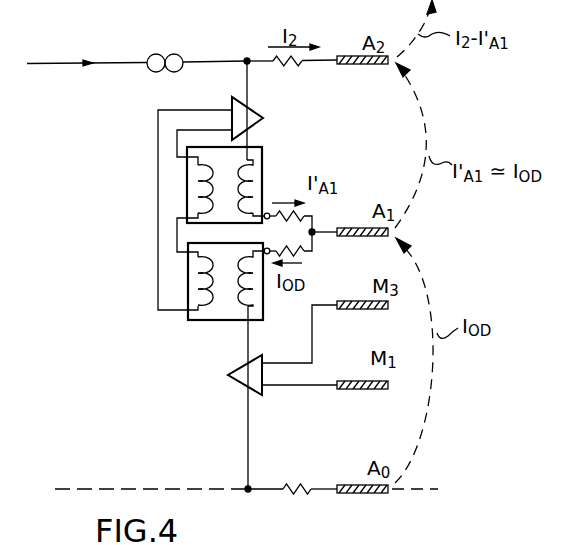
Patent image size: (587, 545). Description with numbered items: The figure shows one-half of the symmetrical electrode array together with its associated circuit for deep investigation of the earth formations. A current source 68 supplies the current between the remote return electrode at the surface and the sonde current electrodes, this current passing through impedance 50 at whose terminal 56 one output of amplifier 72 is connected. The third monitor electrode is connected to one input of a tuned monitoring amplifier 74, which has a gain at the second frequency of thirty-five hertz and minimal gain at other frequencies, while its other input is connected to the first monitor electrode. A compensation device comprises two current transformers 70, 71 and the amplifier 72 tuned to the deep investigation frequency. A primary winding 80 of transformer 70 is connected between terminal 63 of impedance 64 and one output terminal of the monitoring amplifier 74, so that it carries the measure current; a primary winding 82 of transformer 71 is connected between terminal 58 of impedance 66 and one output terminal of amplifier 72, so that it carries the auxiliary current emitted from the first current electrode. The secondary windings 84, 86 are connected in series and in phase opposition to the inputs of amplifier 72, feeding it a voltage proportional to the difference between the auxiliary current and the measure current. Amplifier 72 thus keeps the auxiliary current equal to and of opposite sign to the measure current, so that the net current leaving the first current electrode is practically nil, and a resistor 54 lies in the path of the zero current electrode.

The current source 68 is at (151, 57).
The terminal of impedance 50 56 is at (247, 60).
The impedance 50 is at (296, 65).
The amplifier 72 is at (250, 109).
The primary winding 82 is at (262, 153).
The secondary winding 84 is at (196, 183).
The terminal of impedance 66 58 is at (268, 211).
The impedance 66 is at (310, 210).
The current transformer 71 is at (187, 232).
The terminal of impedance 64 63 is at (304, 254).
The impedance 64 is at (308, 262).
The secondary winding 86 is at (205, 278).
The current transformer 70 is at (220, 319).
The primary winding 80 is at (251, 298).
The monitoring amplifier 74 is at (228, 376).
The resistor 54 is at (292, 487).